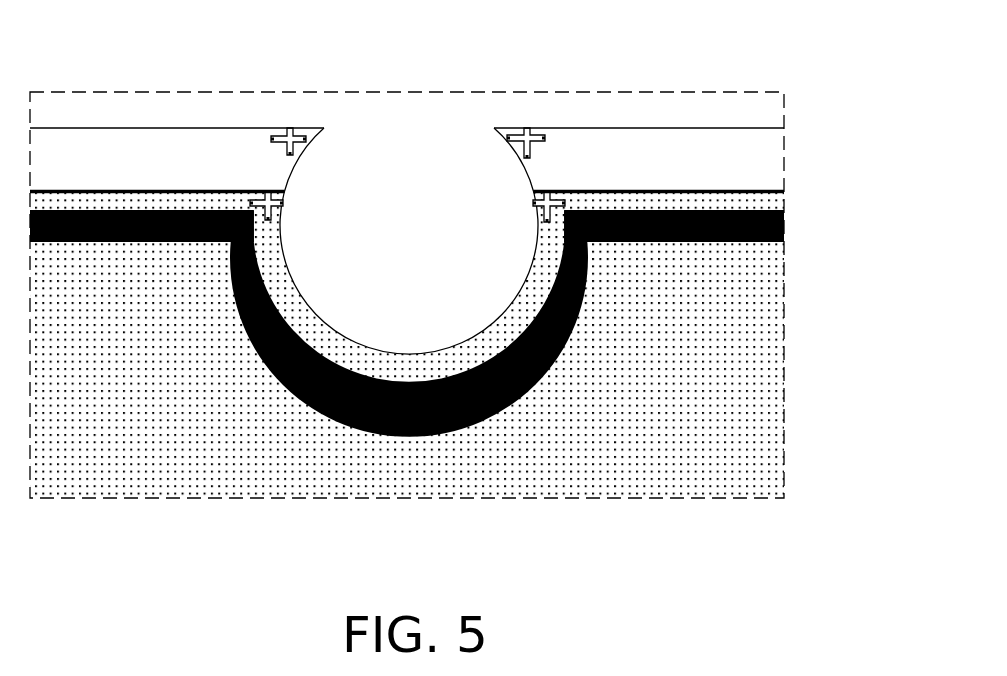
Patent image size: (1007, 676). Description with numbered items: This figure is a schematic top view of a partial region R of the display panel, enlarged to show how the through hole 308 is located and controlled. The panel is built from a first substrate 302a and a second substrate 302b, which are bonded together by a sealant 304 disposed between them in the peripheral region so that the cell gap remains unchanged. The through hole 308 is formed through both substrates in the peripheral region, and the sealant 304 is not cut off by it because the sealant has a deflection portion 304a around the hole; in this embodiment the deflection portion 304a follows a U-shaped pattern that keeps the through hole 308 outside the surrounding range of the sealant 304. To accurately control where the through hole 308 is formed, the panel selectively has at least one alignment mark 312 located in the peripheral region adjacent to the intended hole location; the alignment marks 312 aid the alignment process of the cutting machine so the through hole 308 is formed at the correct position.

The partial region R is at (742, 92).
The first substrate 302a is at (737, 128).
The second substrate 302b is at (740, 190).
The sealant 304 is at (747, 242).
The deflection portion 304a is at (563, 320).
The through hole 308 is at (300, 292).
The alignment mark 312 is at (250, 203).